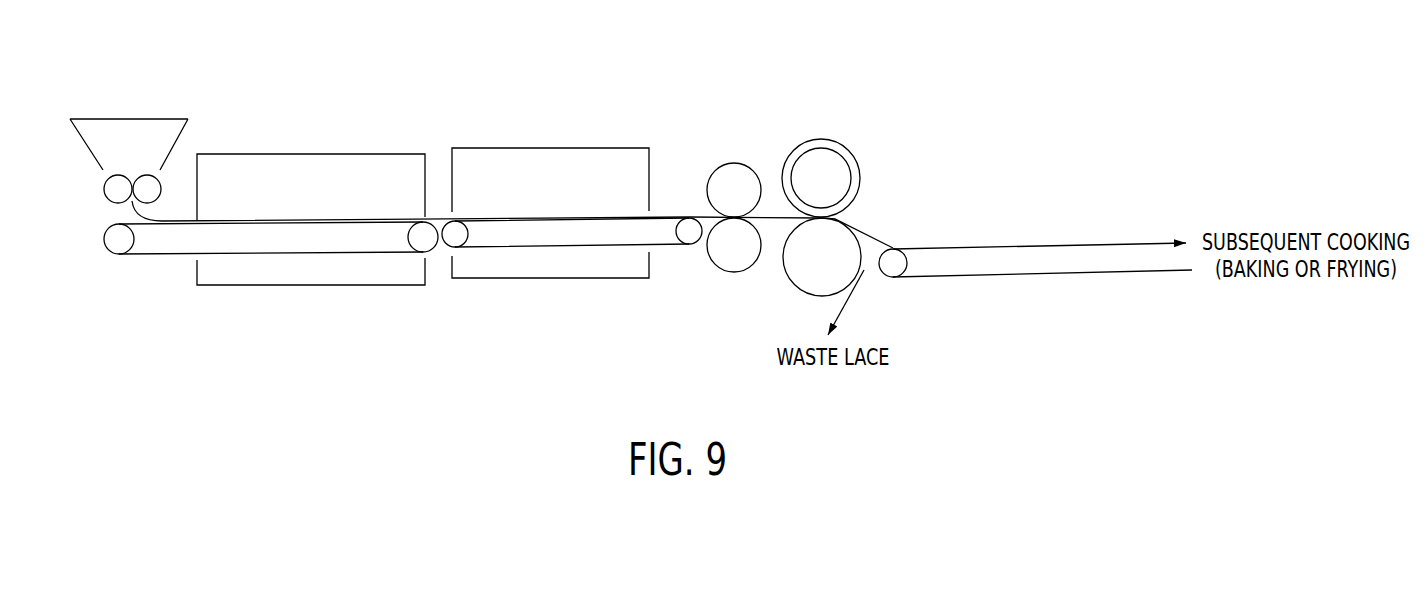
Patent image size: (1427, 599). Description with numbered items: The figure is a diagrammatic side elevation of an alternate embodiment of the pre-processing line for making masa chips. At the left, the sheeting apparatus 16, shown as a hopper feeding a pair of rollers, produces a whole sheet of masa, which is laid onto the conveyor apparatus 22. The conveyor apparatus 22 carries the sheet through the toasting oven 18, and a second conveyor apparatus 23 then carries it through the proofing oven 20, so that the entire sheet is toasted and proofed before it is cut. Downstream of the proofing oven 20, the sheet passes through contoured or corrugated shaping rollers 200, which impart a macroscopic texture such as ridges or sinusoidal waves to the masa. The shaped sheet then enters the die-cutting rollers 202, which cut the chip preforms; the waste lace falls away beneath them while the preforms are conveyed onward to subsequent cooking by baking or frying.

The sheeting apparatus 16 is at (147, 100).
The toasting oven 18 is at (307, 100).
The proofing oven 20 is at (546, 95).
The conveyor apparatus 22 is at (152, 265).
The conveyor apparatus 23 is at (487, 258).
The shaping rollers 200 is at (734, 160).
The die-cutting rollers 202 is at (851, 120).